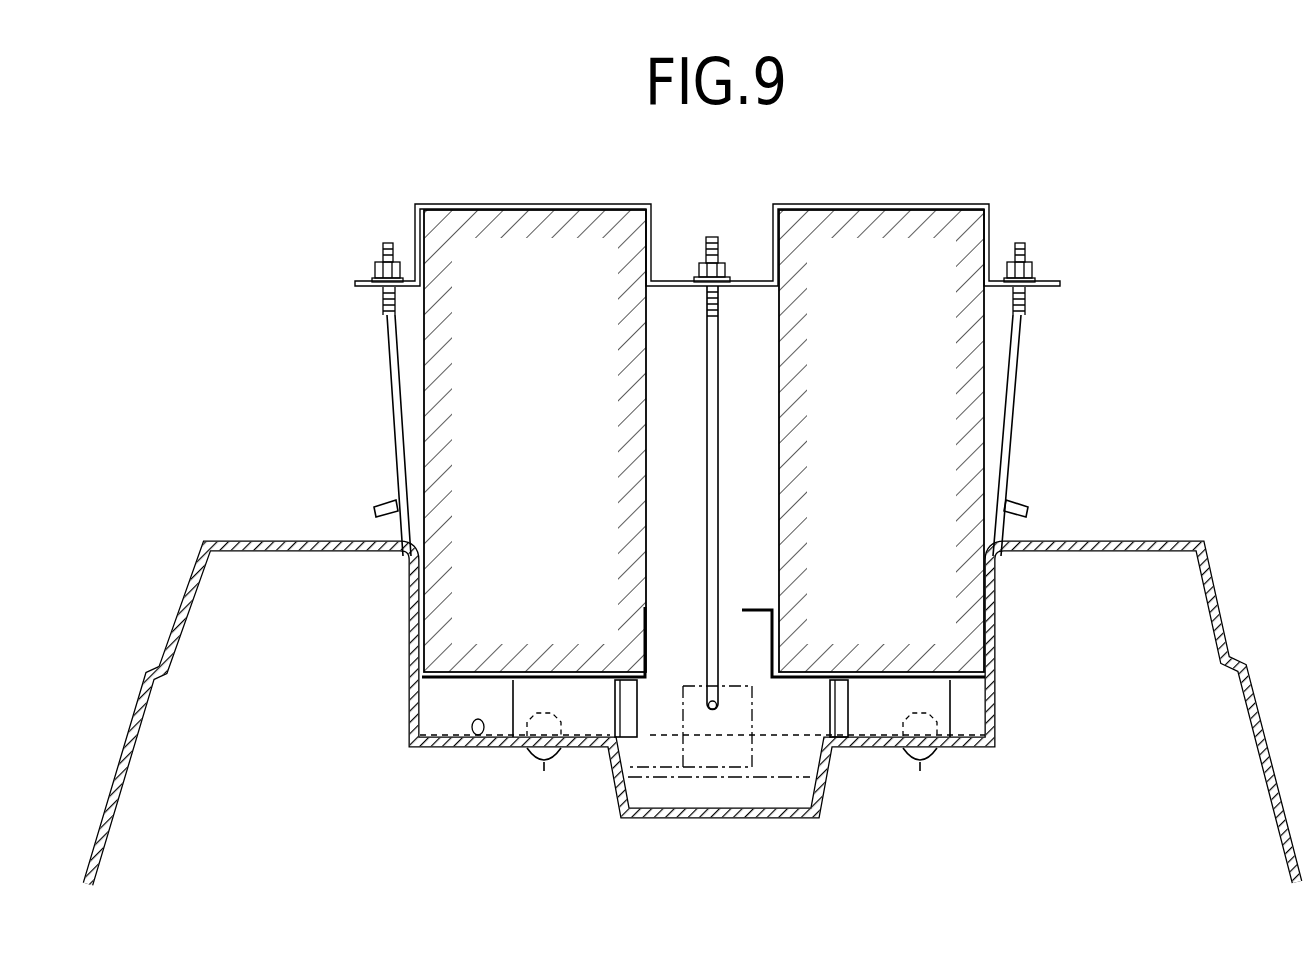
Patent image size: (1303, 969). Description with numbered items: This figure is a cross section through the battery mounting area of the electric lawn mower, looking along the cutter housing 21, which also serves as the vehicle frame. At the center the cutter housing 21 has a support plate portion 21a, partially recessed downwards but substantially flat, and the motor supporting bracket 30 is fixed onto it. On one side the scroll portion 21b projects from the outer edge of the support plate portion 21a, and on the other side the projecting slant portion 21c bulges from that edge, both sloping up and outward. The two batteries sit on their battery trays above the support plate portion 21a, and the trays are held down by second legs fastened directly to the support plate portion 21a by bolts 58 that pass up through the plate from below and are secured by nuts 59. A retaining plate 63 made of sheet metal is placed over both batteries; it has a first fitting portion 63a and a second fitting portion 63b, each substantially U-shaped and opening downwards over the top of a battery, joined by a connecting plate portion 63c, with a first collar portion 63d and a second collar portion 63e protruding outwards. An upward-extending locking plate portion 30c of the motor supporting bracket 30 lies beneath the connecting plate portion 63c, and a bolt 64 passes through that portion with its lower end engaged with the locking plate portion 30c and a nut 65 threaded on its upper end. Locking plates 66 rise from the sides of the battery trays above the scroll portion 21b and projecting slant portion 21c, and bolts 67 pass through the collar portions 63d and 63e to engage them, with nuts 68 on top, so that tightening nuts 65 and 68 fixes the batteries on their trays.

The cutter housing 21 is at (1236, 589).
The support plate portion 21a is at (478, 735).
The scroll portion 21b is at (307, 543).
The projecting slant portion 21c is at (1085, 543).
The motor supporting bracket 30 is at (720, 778).
The locking plate portion 30c is at (760, 737).
The bolt 58 is at (546, 766).
The nut 59 is at (540, 720).
The retaining plate 63 is at (781, 201).
The first fitting portion 63a is at (540, 204).
The second fitting portion 63b is at (866, 204).
The connecting plate portion 63c is at (666, 281).
The first collar portion 63d is at (357, 282).
The second collar portion 63e is at (1058, 282).
The bolt 64 is at (707, 425).
The nut 65 is at (722, 262).
The locking plate 66 is at (372, 547).
The bolt 67 is at (394, 383).
The nut 68 is at (375, 268).